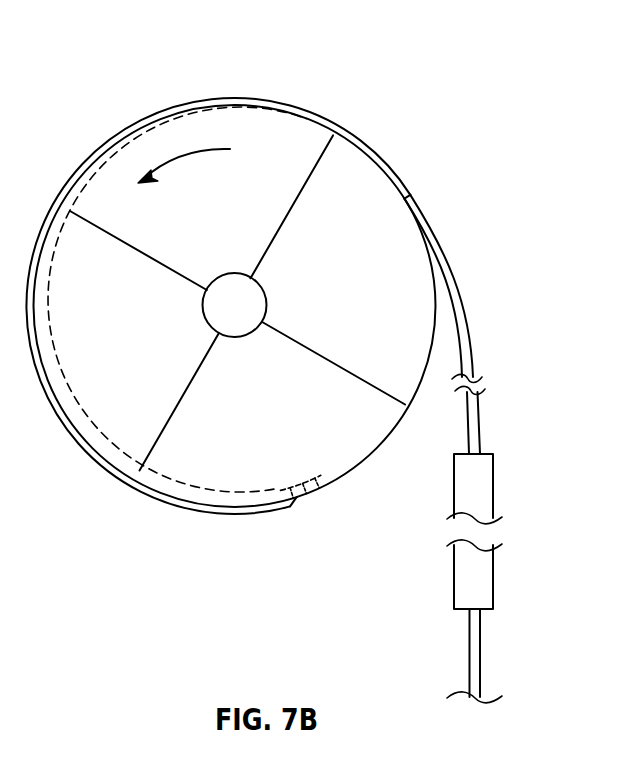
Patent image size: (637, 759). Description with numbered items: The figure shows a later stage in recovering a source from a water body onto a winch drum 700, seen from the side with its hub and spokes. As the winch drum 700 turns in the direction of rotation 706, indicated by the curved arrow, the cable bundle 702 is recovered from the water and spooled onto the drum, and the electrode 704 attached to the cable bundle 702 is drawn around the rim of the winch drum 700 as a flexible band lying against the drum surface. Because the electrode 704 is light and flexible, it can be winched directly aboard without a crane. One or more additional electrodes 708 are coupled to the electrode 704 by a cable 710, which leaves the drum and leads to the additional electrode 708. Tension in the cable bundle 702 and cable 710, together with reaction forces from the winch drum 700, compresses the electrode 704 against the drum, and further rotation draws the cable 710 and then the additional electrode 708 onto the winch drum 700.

The winch drum 700 is at (345, 478).
The cable bundle 702 is at (298, 498).
The electrode 704 is at (246, 97).
The direction of rotation 706 is at (185, 156).
The additional electrode 708 is at (493, 493).
The cable 710 is at (464, 323).